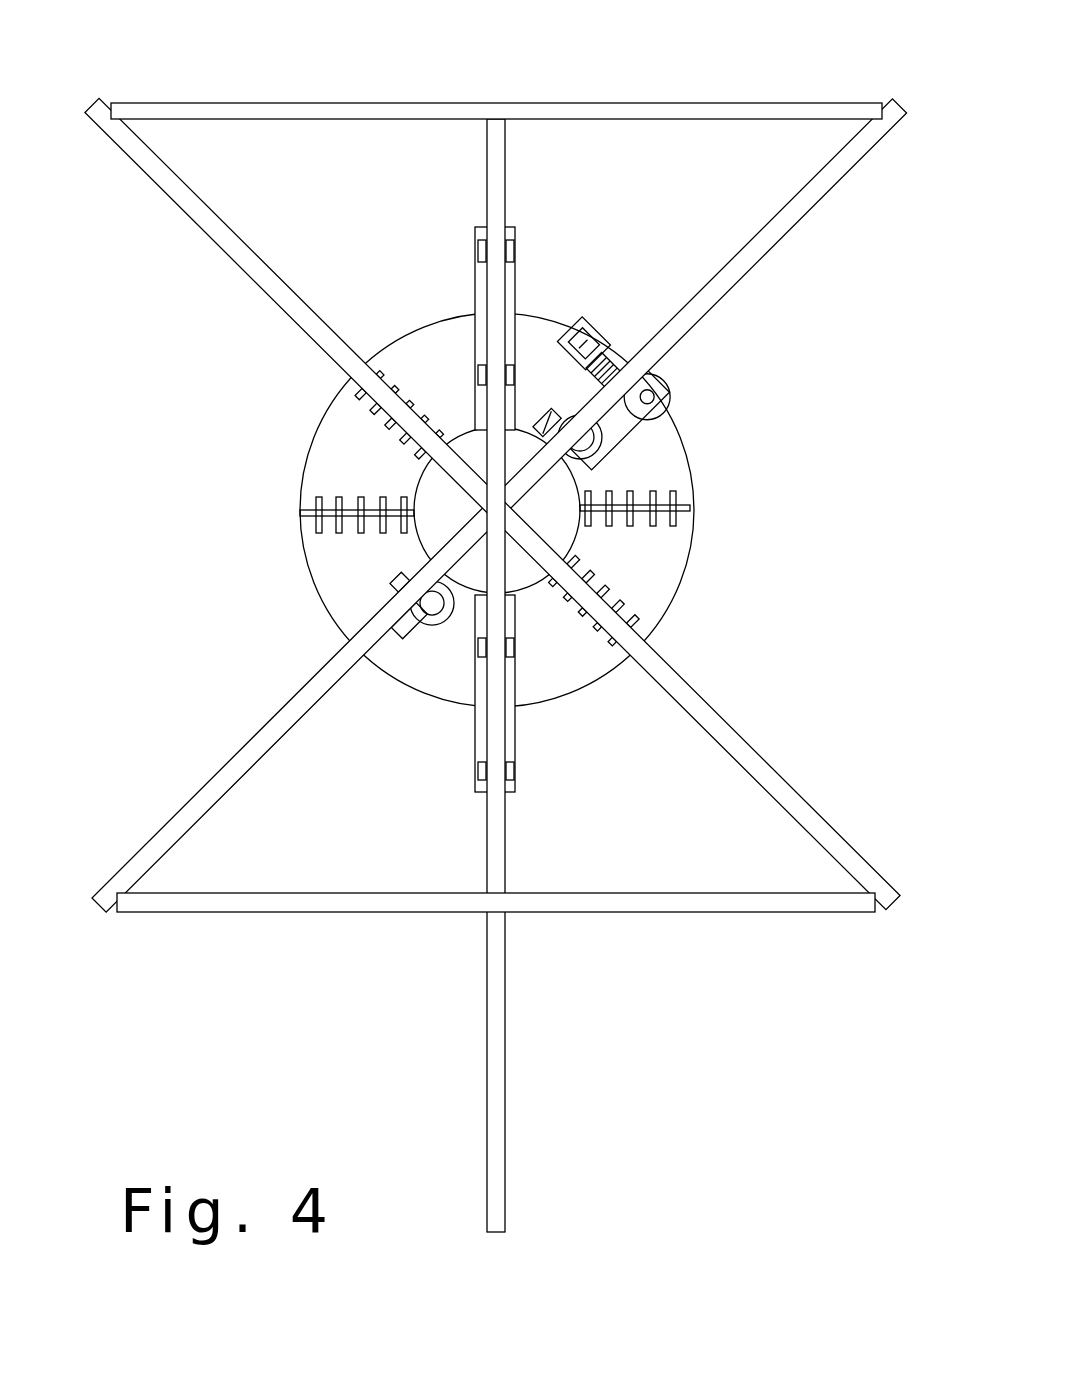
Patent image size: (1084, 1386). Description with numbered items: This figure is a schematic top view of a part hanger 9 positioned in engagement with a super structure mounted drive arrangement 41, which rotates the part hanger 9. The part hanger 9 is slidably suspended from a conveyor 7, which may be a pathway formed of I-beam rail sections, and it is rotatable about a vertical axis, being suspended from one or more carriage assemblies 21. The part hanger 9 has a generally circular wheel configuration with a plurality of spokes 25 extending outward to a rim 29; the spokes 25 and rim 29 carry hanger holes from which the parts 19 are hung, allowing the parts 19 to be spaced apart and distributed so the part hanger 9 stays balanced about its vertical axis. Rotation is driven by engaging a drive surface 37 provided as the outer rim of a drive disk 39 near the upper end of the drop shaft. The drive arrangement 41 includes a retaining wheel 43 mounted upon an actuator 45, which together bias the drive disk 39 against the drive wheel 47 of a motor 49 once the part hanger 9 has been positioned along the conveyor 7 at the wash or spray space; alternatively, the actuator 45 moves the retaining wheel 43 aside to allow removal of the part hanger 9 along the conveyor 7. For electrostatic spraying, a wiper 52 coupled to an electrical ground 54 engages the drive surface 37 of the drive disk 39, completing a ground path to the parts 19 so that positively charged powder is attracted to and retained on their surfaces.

The conveyor 7 is at (497, 1050).
The part hanger 9 is at (328, 395).
The parts 19 is at (622, 604).
The carriage assemblies 21 is at (481, 270).
The spokes 25 is at (318, 503).
The rim 29 is at (310, 430).
The drive surface 37 is at (565, 542).
The drive disk 39 is at (565, 548).
The drive arrangement 41 is at (623, 435).
The retaining wheel 43 is at (400, 582).
The actuator 45 is at (410, 625).
The drive wheel 47 is at (603, 455).
The motor 49 is at (610, 350).
The wiper 52 is at (545, 418).
The electrical ground 54 is at (787, 220).